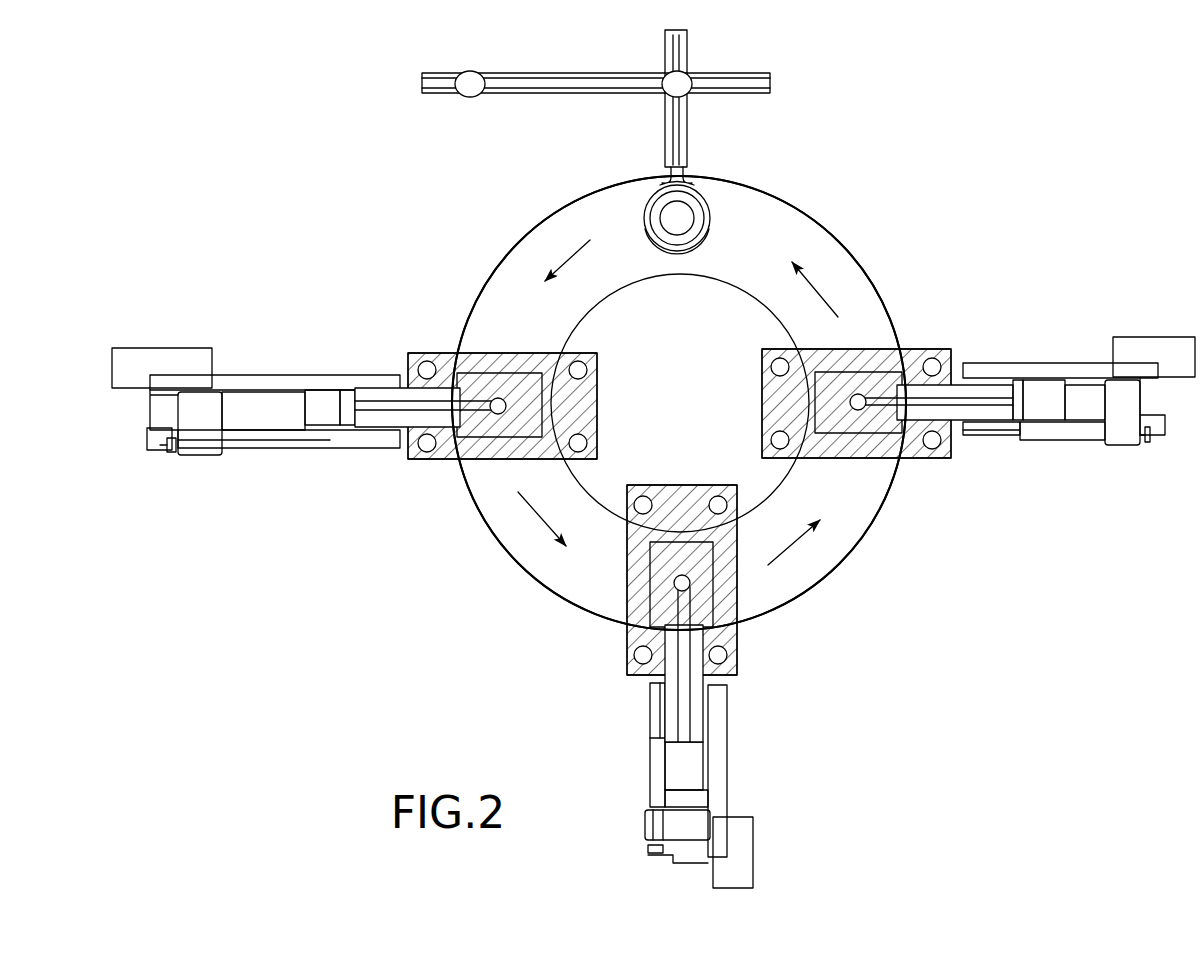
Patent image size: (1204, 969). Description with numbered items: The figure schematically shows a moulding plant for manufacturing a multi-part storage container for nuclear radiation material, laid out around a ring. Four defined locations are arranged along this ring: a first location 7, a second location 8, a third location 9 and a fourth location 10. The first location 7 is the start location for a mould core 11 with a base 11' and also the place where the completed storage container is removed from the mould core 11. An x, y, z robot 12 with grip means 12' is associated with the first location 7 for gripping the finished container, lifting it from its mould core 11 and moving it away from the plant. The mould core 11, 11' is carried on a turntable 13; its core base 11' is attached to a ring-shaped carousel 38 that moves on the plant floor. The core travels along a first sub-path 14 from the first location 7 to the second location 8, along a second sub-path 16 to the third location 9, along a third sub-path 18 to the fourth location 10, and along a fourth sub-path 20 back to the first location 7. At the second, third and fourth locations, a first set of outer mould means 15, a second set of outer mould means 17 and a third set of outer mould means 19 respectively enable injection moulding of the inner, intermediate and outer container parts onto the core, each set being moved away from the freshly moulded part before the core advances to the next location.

The first location 7 is at (645, 185).
The second location 8 is at (495, 340).
The third location 9 is at (622, 575).
The fourth location 10 is at (860, 467).
The mould core 11 is at (711, 190).
The base 11' is at (739, 201).
The x, y, z robot 12 is at (613, 61).
The grip means 12' is at (703, 107).
The turntable 13 is at (590, 213).
The first sub-path 14 is at (563, 262).
The first set of outer mould means 15 is at (498, 420).
The second sub-path 16 is at (535, 515).
The second set of outer mould means 17 is at (698, 567).
The third sub-path 18 is at (793, 550).
The third set of outer mould means 19 is at (860, 372).
The fourth sub-path 20 is at (820, 290).
The carousel 38 is at (857, 523).